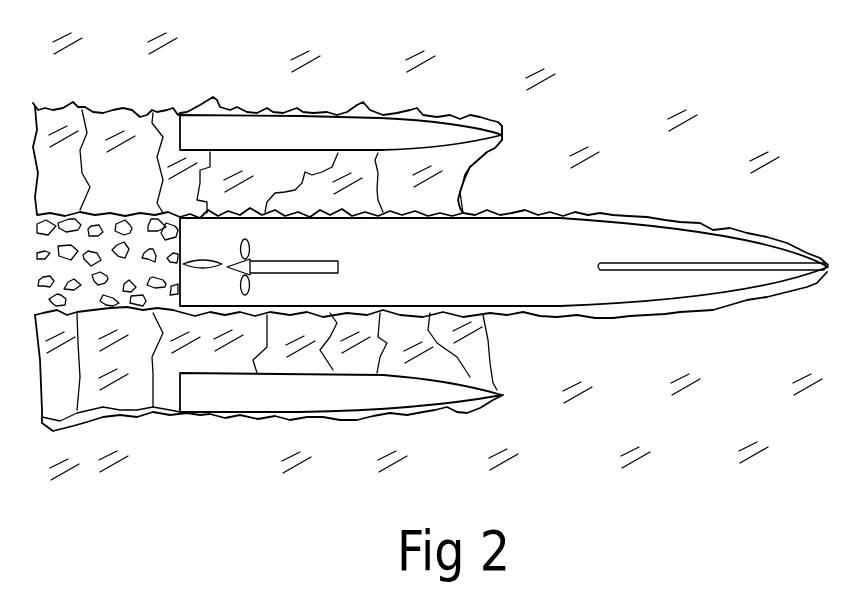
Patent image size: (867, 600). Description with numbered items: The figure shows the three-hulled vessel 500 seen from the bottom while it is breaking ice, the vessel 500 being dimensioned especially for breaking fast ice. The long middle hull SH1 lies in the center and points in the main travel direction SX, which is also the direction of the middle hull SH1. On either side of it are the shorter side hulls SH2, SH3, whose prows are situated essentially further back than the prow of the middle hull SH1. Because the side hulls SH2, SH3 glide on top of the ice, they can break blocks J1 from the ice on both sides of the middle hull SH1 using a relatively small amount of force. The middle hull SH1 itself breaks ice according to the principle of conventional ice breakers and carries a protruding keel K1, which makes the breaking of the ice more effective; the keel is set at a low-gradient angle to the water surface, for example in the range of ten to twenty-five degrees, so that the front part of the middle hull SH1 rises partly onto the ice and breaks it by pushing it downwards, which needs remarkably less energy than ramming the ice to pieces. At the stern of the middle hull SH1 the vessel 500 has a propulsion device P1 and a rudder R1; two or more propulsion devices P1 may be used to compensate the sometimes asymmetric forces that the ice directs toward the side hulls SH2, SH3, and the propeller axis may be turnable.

The vessel 500 is at (628, 62).
The middle hull SH1 is at (674, 233).
The side hull SH2 is at (444, 402).
The side hull SH3 is at (442, 128).
The blocks J1 is at (467, 188).
The keel K1 is at (772, 272).
The propulsion device P1 is at (247, 245).
The rudder R1 is at (213, 262).
The main travel direction SX is at (808, 412).